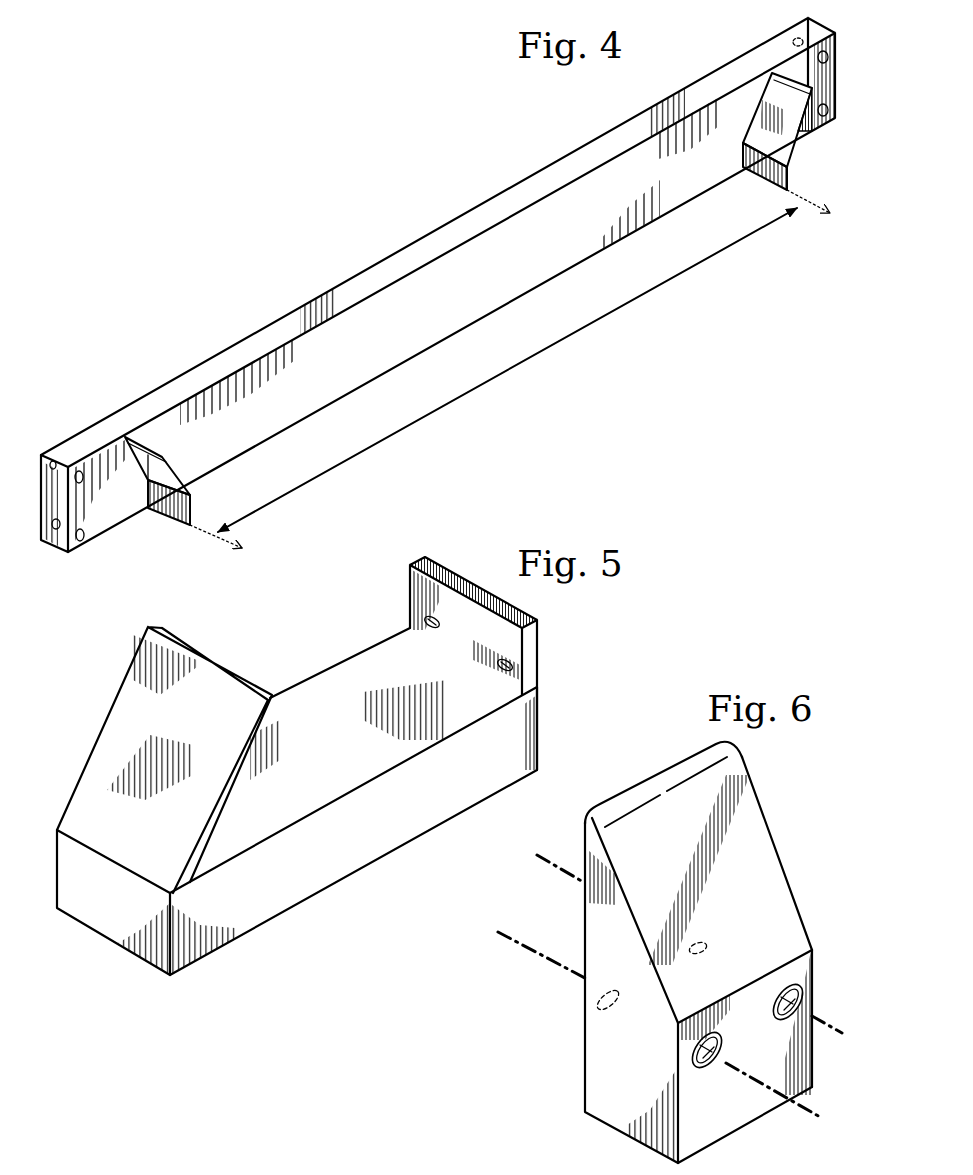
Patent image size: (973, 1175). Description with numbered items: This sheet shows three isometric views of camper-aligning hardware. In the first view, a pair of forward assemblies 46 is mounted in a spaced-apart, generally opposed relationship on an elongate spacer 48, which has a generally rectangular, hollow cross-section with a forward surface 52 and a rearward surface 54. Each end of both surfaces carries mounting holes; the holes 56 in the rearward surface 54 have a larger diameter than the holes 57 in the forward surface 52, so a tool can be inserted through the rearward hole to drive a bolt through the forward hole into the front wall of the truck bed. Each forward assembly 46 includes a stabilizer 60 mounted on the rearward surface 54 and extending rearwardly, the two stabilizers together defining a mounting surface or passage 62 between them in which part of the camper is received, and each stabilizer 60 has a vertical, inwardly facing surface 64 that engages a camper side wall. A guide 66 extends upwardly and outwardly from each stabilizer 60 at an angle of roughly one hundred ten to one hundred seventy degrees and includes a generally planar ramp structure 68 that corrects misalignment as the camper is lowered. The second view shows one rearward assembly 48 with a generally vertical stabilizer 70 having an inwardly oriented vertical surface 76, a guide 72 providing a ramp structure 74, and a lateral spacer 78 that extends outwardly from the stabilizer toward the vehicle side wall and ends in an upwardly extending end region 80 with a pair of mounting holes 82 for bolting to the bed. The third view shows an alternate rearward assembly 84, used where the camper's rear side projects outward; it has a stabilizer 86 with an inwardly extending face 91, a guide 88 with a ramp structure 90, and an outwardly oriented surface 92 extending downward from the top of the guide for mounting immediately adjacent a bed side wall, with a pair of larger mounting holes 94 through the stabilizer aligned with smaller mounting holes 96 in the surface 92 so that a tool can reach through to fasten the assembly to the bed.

In FIG. 4, the forward assembly 46 is at (443, 303).
In FIG. 4, the forward surface 52 is at (50, 487).
In FIG. 4, the rearward surface 54 is at (426, 285).
In FIG. 4, the holes 56 is at (82, 530).
In FIG. 4, the holes 57 is at (54, 462).
In FIG. 4, the stabilizer 60 is at (481, 325).
In FIG. 4, the mounting surface or passage 62 is at (450, 402).
In FIG. 4, the inwardly facing surface 64 is at (193, 503).
In FIG. 4, the guide 66 is at (145, 475).
In FIG. 4, the ramp structure 68 is at (150, 447).
In FIG. 5, the spacer / rearward assembly 48 is at (301, 753).
In FIG. 5, the stabilizer 70 is at (282, 801).
In FIG. 5, the guide 72 is at (159, 760).
In FIG. 5, the ramp structure 74 is at (134, 841).
In FIG. 5, the inwardly oriented vertical surface 76 is at (83, 900).
In FIG. 5, the lateral spacer 78 is at (299, 861).
In FIG. 5, the end region 80 is at (468, 651).
In FIG. 5, the mounting holes 82 is at (426, 619).
In FIG. 6, the alternate rearward assembly 84 is at (670, 952).
In FIG. 6, the stabilizer 86 is at (818, 988).
In FIG. 6, the guide 88 is at (790, 867).
In FIG. 6, the ramp structure 90 is at (728, 895).
In FIG. 6, the inwardly extending face 91 is at (713, 1118).
In FIG. 6, the outwardly oriented surface 92 is at (585, 1056).
In FIG. 6, the mounting holes 94 is at (780, 1016).
In FIG. 6, the mounting holes 96 is at (712, 947).